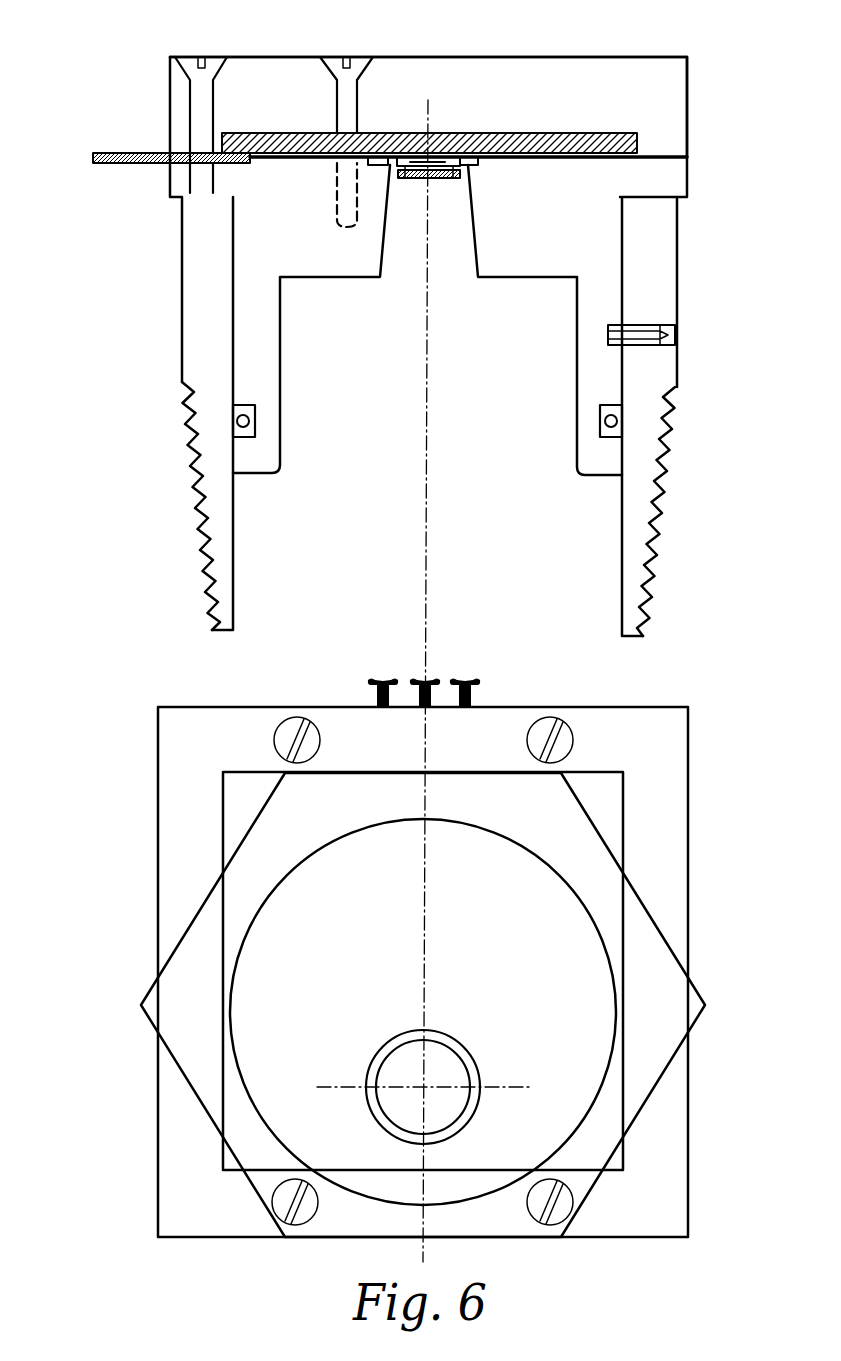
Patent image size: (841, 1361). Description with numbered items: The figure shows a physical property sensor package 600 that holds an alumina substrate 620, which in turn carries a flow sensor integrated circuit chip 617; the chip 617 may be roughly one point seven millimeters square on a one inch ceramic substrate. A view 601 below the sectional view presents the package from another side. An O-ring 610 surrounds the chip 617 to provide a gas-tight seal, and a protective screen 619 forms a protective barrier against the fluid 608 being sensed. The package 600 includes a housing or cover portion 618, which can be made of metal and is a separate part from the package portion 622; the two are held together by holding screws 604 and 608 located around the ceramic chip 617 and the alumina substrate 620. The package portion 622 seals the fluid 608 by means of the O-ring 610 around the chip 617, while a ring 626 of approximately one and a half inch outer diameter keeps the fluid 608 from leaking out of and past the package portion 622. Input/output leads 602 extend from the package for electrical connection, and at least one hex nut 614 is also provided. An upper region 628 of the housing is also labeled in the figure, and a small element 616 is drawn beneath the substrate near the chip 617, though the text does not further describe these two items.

The physical property sensor package 600 is at (88, 52).
The base fixture (plan view) 601 is at (124, 743).
The I/O leads 602 is at (98, 165).
The holding screw 604 is at (188, 57).
The holding screw 608 is at (333, 57).
The O-ring 610 is at (480, 160).
The hex nut 614 is at (675, 335).
The spacer 616 is at (400, 168).
The integrated circuit chip 617 is at (455, 168).
The housing 618 is at (590, 57).
The protective screen 619 is at (460, 180).
The alumina substrate 620 is at (566, 133).
The package portion 622 is at (303, 219).
The ring 626 is at (233, 420).
The upper body portion 628 is at (503, 101).